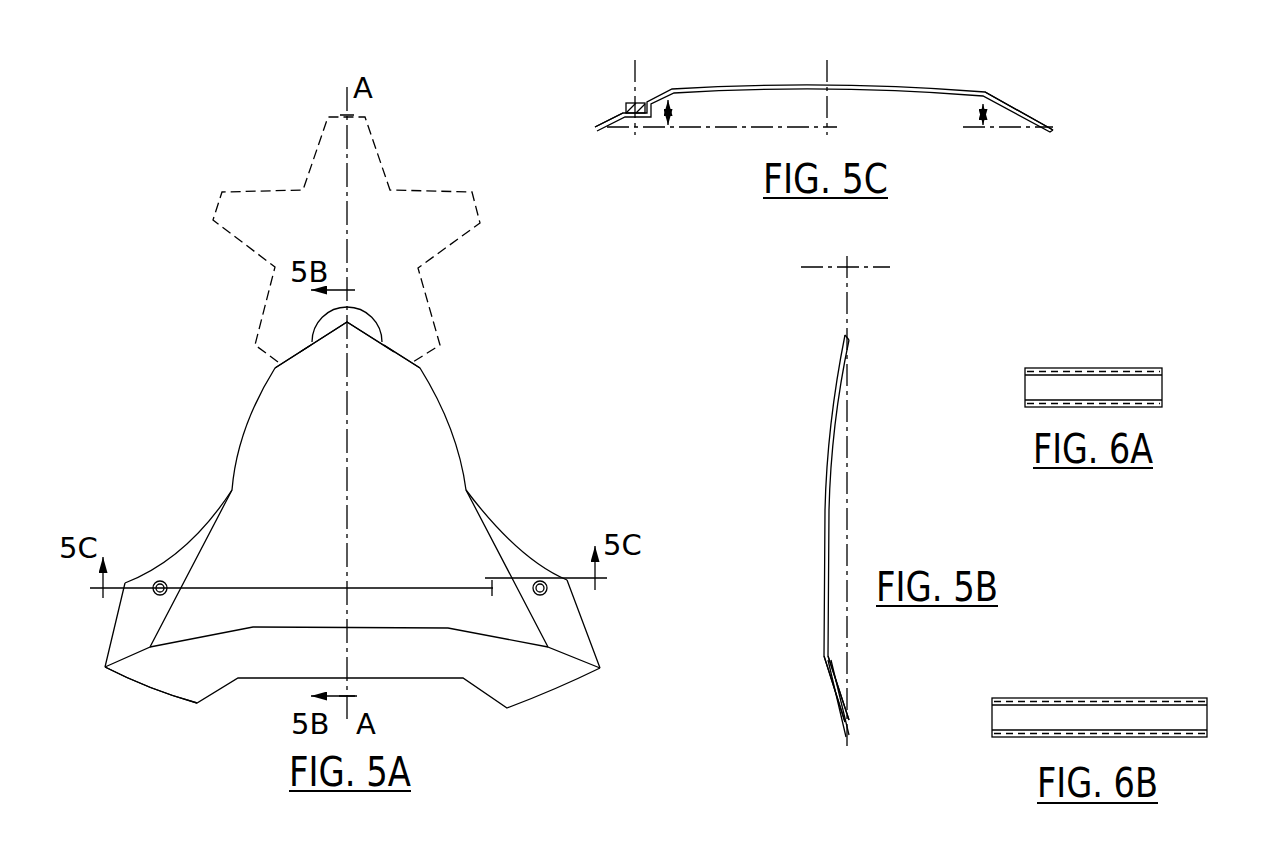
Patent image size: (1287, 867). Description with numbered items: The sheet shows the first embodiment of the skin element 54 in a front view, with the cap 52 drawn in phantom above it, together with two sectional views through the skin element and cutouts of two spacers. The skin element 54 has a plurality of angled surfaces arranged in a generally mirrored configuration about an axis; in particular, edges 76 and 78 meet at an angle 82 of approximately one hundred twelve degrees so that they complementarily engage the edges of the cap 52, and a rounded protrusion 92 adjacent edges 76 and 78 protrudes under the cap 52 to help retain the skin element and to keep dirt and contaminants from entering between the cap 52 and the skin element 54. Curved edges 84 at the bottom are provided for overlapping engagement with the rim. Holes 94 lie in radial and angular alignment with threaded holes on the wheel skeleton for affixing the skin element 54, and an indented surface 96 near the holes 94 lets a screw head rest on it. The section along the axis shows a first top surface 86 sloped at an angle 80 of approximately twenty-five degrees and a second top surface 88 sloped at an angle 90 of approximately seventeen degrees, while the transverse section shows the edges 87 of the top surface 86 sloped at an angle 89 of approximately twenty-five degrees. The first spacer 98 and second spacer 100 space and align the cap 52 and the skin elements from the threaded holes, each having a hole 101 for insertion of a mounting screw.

In FIG. 5A, the cap 52 is at (330, 148).
In FIG. 5A, the skin element 54 is at (492, 447).
In FIG. 5A, the edge 76 is at (410, 353).
In FIG. 5A, the edge 78 is at (300, 350).
In FIG. 5B, the angle 80 is at (852, 668).
In FIG. 5A, the angle 82 is at (400, 360).
In FIG. 5A, the curved edges 84 is at (157, 692).
In FIG. 5C, the first top surface 86 is at (862, 87).
In FIG. 5B, the first top surface 86 is at (823, 504).
In FIG. 5C, the edges 87 is at (618, 114).
In FIG. 5B, the second top surface 88 is at (831, 676).
In FIG. 5C, the angle 89 is at (668, 127).
In FIG. 5B, the angle 90 is at (825, 733).
In FIG. 5A, the rounded protrusion 92 is at (373, 332).
In FIG. 5A, the holes 94 is at (153, 597).
In FIG. 5C, the indented surface 96 is at (639, 104).
In FIG. 6A, the first spacer 98 is at (1163, 368).
In FIG. 6B, the second spacer 100 is at (1163, 698).
In FIG. 6A, the hole 101 is at (1141, 397).
In FIG. 6B, the hole 101 is at (1185, 730).